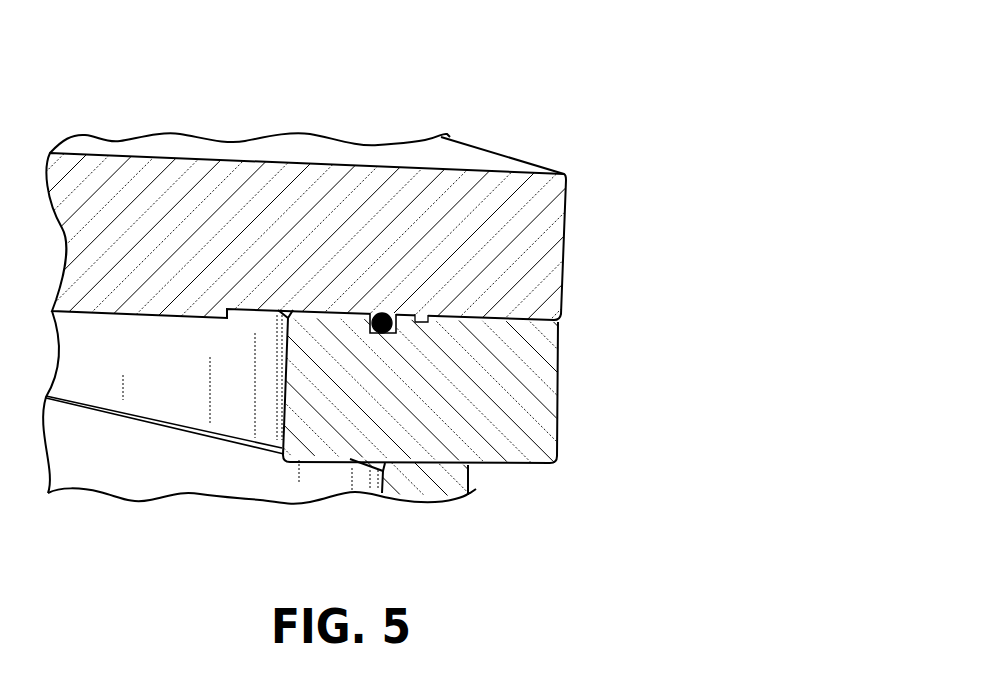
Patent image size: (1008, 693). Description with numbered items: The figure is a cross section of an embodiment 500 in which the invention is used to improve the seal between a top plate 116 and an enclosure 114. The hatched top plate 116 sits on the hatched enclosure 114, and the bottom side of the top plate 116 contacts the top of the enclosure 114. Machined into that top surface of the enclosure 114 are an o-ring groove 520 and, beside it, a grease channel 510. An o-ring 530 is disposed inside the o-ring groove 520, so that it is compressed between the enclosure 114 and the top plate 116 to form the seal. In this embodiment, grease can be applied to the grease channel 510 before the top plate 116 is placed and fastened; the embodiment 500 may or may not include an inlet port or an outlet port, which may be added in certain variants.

The embodiment 500 is at (465, 50).
The top plate 116 is at (567, 246).
The enclosure 114 is at (557, 447).
The grease channel 510 is at (398, 320).
The o-ring groove 520 is at (398, 326).
The o-ring 530 is at (393, 330).